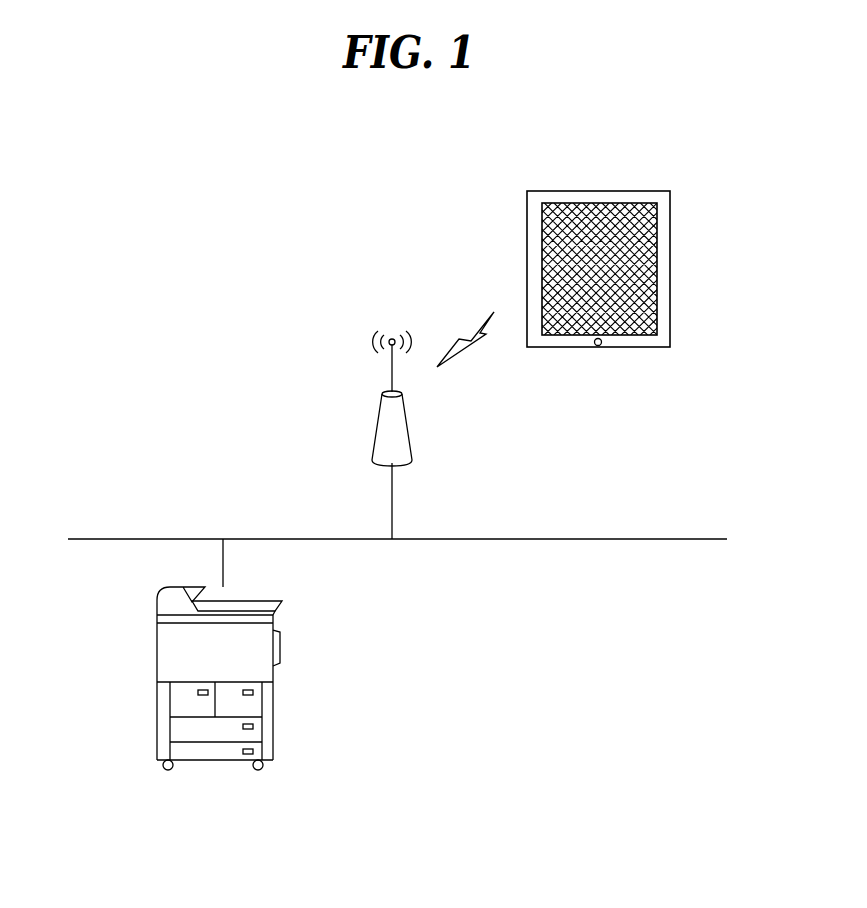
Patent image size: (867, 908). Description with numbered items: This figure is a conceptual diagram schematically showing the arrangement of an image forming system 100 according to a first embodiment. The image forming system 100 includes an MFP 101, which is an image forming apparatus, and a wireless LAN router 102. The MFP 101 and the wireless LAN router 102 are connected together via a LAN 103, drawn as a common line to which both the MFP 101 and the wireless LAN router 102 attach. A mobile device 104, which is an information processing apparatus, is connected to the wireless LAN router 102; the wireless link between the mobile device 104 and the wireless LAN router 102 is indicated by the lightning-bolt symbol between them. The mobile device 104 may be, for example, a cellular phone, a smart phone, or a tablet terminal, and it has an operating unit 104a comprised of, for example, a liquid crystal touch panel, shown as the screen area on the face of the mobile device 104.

The image forming system 100 is at (455, 238).
The MFP 101 is at (157, 662).
The wireless LAN router 102 is at (378, 422).
The LAN 103 is at (640, 540).
The mobile device 104 is at (670, 278).
The operating unit 104a is at (600, 215).